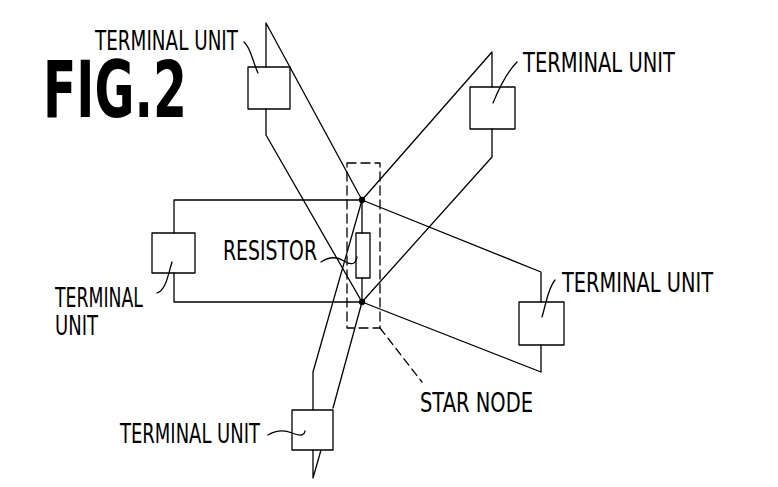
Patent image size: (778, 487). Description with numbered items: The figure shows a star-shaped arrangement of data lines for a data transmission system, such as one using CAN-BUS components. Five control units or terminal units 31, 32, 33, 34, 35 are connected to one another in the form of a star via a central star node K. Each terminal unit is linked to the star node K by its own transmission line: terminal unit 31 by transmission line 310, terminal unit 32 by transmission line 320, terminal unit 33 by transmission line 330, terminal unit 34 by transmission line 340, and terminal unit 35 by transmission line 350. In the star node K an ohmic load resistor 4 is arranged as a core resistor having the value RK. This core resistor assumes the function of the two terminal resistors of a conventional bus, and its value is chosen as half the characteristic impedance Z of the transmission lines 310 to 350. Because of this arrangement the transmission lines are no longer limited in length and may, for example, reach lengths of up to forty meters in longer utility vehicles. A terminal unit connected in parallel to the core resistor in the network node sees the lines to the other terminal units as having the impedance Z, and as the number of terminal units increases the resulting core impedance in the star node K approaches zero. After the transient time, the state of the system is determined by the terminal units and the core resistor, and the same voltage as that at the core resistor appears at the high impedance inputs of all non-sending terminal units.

The terminal unit 31 is at (250, 76).
The terminal unit 32 is at (515, 100).
The terminal unit 33 is at (564, 318).
The terminal unit 34 is at (333, 434).
The terminal unit 35 is at (165, 247).
The transmission line 310 is at (307, 110).
The transmission line 320 is at (430, 145).
The transmission line 330 is at (463, 332).
The transmission line 340 is at (341, 363).
The transmission line 350 is at (267, 283).
The ohmic load resistor 4 is at (371, 248).
The star node K is at (367, 163).